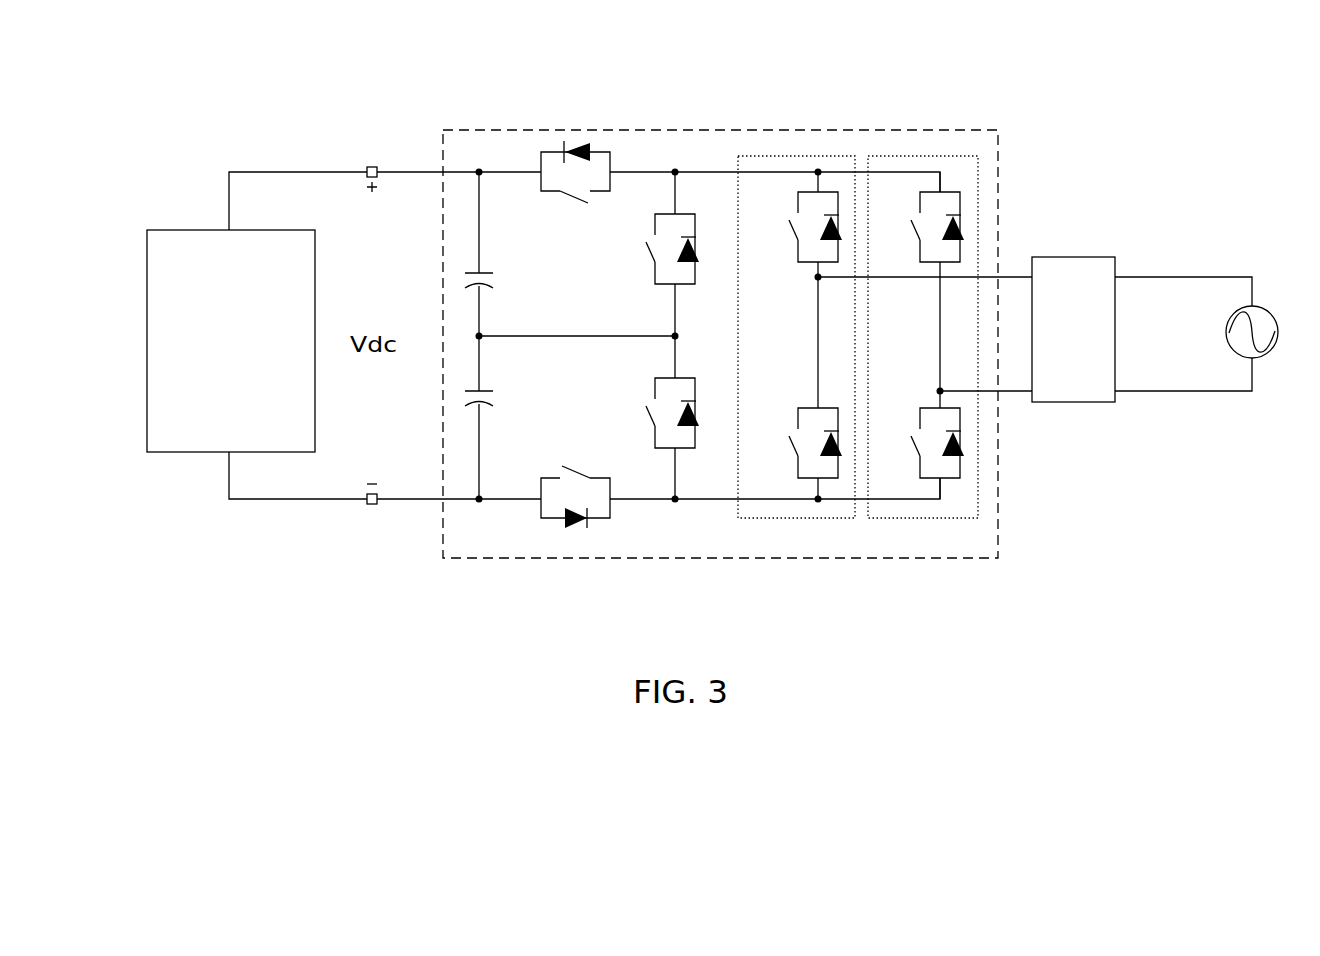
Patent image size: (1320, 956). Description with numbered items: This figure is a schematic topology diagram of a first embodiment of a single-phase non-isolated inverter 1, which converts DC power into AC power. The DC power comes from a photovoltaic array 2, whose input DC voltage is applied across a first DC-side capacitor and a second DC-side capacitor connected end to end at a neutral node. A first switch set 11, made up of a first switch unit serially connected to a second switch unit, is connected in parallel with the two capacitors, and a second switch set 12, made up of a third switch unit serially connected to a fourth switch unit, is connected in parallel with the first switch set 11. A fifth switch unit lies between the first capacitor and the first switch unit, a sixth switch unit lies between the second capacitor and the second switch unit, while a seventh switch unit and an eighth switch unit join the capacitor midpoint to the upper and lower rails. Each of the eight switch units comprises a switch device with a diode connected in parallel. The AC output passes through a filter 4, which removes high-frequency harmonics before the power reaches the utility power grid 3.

The single-phase non-isolated inverter 1 is at (442, 122).
The photovoltaic array 2 is at (165, 236).
The utility power grid 3 is at (1270, 303).
The filter 4 is at (1118, 248).
The first switch set 11 is at (838, 155).
The second switch set 12 is at (886, 155).